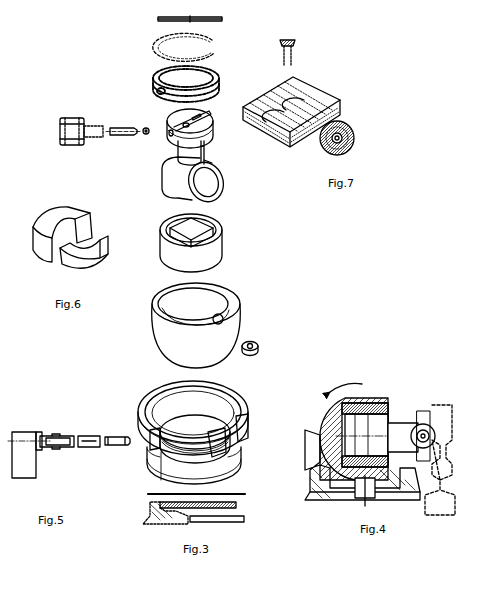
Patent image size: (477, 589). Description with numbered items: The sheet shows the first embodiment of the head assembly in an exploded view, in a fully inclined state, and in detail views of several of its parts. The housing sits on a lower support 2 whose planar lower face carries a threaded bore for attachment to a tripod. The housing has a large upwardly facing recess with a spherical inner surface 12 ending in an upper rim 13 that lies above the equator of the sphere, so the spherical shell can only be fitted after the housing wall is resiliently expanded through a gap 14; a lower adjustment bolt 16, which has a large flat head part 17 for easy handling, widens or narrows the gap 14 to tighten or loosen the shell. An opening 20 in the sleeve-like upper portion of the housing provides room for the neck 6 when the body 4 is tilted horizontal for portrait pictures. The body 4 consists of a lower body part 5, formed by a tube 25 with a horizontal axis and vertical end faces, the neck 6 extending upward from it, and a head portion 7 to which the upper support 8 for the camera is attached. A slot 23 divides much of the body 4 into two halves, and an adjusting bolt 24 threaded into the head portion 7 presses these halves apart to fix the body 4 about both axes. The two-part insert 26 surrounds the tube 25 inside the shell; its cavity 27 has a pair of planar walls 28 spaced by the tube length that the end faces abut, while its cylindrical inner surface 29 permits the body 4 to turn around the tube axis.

In FIG. 3, the lower support 2 is at (240, 513).
In FIG. 3, the body 4 is at (235, 178).
In FIG. 3, the lower body part 5 is at (160, 180).
In FIG. 3, the neck 6 is at (177, 152).
In FIG. 3, the head portion 7 is at (209, 117).
In FIG. 7, the upper support 8 is at (310, 88).
In FIG. 3, the spherical inner surface 12 is at (165, 402).
In FIG. 3, the upper rim 13 is at (232, 306).
In FIG. 3, the gap 14 is at (157, 472).
In FIG. 5, the lower adjustment bolt 16 is at (60, 450).
In FIG. 5, the flat head part 17 is at (16, 479).
In FIG. 3, the opening 20 is at (250, 440).
In FIG. 3, the slot 23 is at (204, 150).
In FIG. 3, the adjusting bolt 24 is at (72, 114).
In FIG. 3, the tube 25 is at (214, 190).
In FIG. 3, the insert 26 is at (224, 244).
In FIG. 3, the cavity 27 is at (176, 229).
In FIG. 6, the planar walls 28 is at (78, 219).
In FIG. 6, the inner surface 29 is at (47, 222).